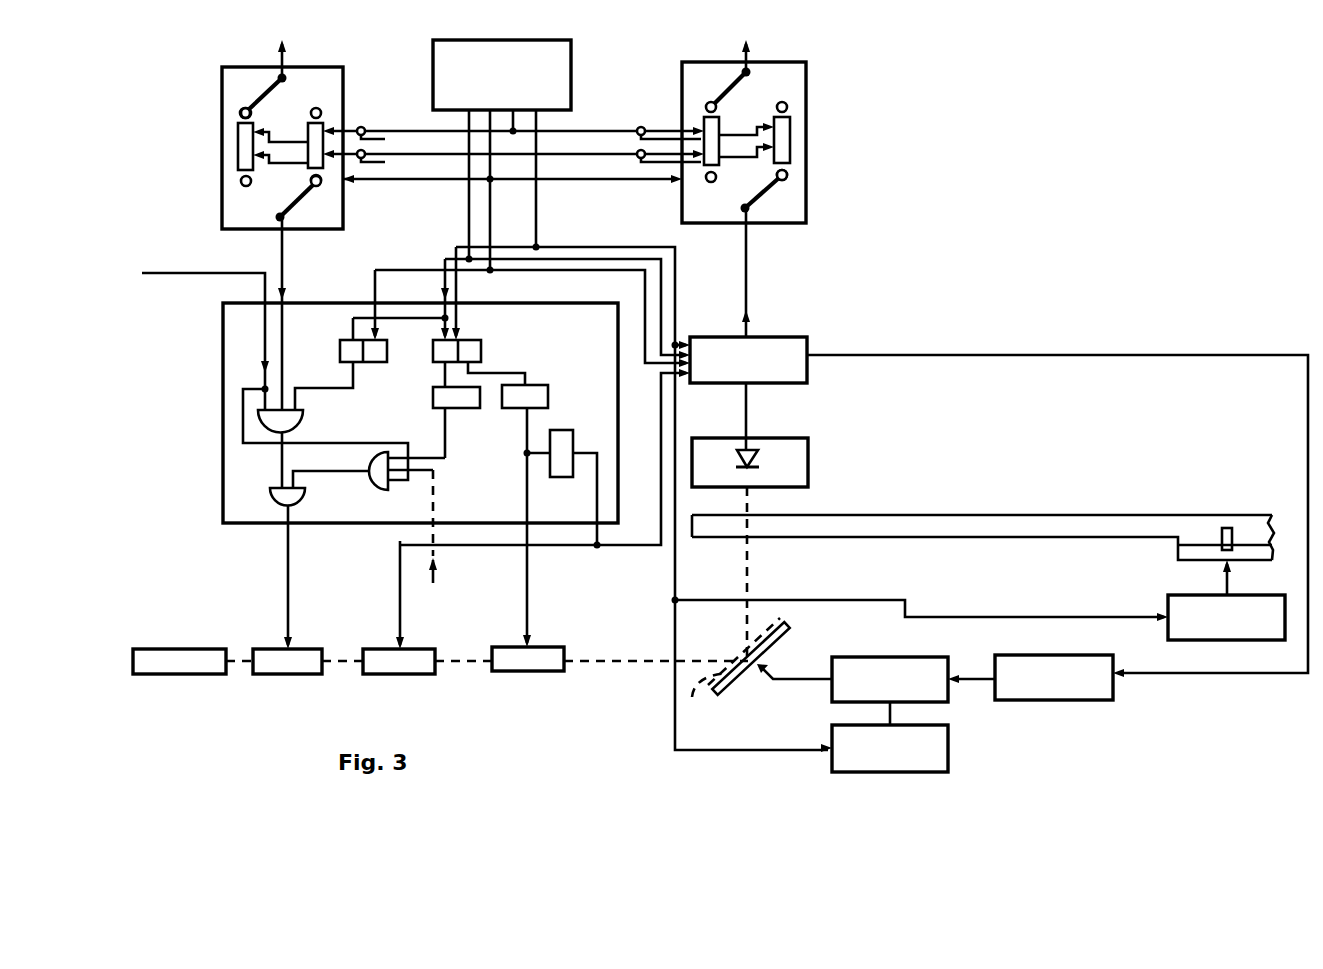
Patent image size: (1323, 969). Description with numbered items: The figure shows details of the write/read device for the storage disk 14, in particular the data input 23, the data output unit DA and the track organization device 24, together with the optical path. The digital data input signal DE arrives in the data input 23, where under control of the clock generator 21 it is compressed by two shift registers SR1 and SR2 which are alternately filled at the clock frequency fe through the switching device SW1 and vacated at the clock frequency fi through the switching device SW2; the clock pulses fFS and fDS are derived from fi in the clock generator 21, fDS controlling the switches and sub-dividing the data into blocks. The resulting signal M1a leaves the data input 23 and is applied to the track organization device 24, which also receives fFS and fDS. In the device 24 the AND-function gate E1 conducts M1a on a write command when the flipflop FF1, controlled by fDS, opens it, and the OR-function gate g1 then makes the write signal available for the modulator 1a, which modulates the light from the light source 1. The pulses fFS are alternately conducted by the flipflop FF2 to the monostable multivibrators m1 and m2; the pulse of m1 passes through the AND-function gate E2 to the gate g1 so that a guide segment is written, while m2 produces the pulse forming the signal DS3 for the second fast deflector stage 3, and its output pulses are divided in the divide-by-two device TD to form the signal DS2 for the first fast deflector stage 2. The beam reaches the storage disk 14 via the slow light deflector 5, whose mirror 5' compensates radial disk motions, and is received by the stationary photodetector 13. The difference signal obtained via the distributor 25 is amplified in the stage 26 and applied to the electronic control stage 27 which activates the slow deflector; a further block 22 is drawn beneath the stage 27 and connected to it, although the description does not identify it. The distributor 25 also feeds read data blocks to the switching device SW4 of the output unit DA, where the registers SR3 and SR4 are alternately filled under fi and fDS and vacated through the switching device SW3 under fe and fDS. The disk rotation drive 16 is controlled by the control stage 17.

The light source 1 is at (185, 676).
The modulator 1a is at (275, 676).
The first stage of fast light deflector 2 is at (383, 676).
The second stage of fast light deflector 3 is at (512, 672).
The slow light deflector 5 is at (772, 674).
The mirror of the slow light deflector 5' is at (733, 672).
The photodetector 13 is at (793, 458).
The storage disk 14 is at (1008, 530).
The disk rotation drive 16 is at (1243, 553).
The control stage 17 is at (1175, 607).
The clock generator 21 is at (560, 60).
The control unit 22 is at (935, 756).
The data input 23 is at (237, 82).
The track organization stage 24 is at (258, 527).
The distributor 25 is at (807, 370).
The amplification stage 26 is at (1113, 690).
The electronic control stage 27 is at (930, 668).
The data input signal DE is at (277, 51).
The data output unit DA is at (795, 98).
The switching device SW1 is at (287, 82).
The switching device SW2 is at (319, 212).
The switching device SW3 is at (751, 76).
The switching device SW4 is at (784, 196).
The shift register SR1 is at (242, 145).
The shift register SR2 is at (323, 127).
The shift register SR3 is at (700, 120).
The shift register SR4 is at (781, 136).
The clock frequency fe is at (513, 125).
The clock pulse signal fFS is at (442, 186).
The clock pulse signal fDS is at (509, 192).
The clock frequency fi is at (512, 180).
The AND-function gate E1 is at (303, 418).
The AND-function gate E2 is at (378, 488).
The OR-function gate g1 is at (305, 496).
The flipflop FF1 is at (377, 362).
The flipflop FF2 is at (472, 350).
The monostable multivibrator m1 is at (464, 400).
The monostable multivibrator m2 is at (540, 397).
The divide-by-two device TD is at (562, 450).
The output signal M1a is at (288, 590).
The signal CD is at (435, 574).
The deflector signal DS2 is at (400, 615).
The deflector signal DS3 is at (528, 580).